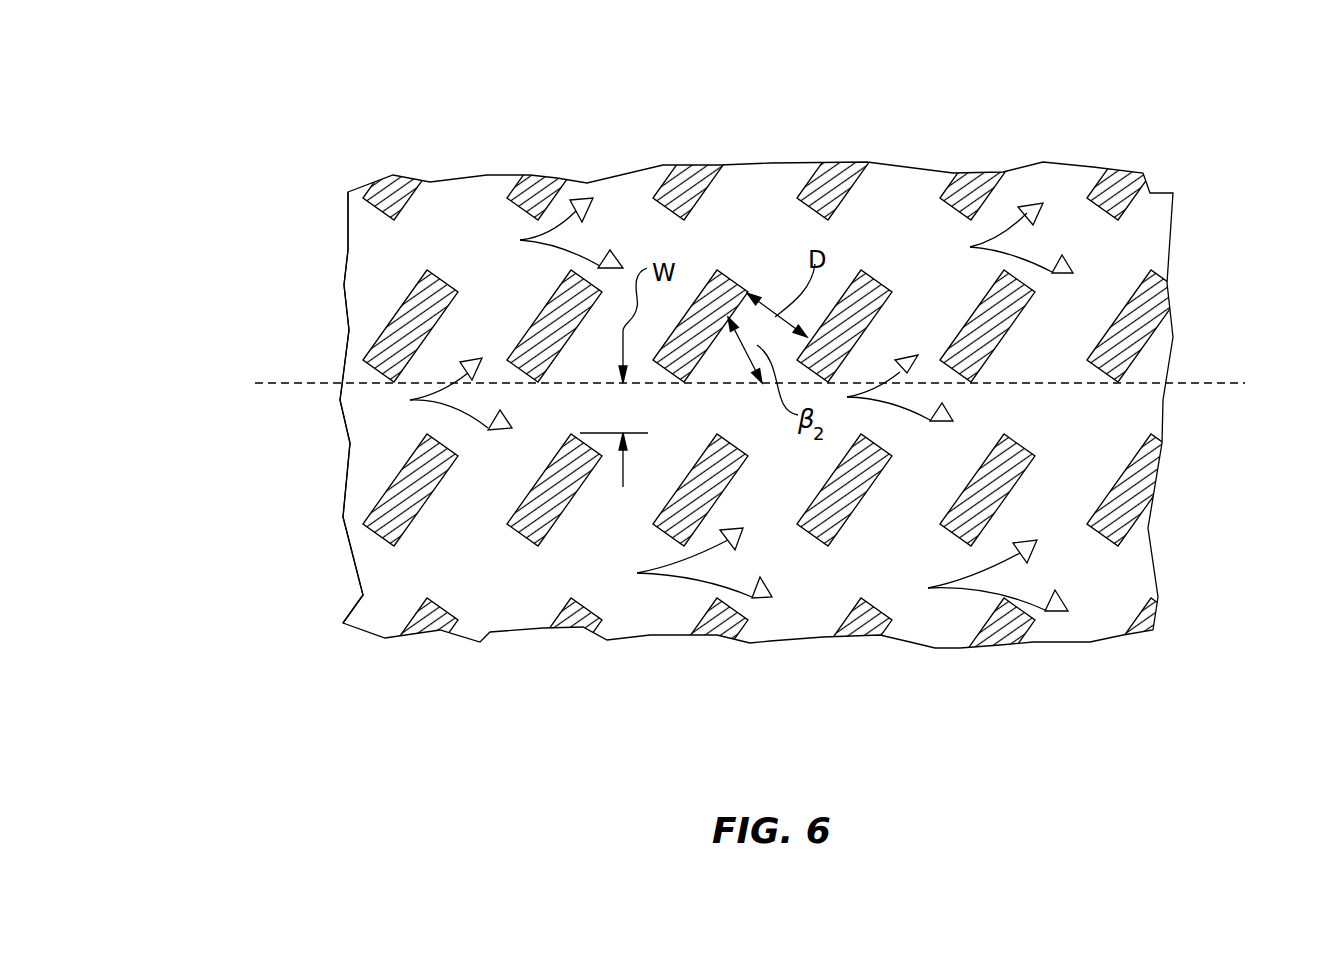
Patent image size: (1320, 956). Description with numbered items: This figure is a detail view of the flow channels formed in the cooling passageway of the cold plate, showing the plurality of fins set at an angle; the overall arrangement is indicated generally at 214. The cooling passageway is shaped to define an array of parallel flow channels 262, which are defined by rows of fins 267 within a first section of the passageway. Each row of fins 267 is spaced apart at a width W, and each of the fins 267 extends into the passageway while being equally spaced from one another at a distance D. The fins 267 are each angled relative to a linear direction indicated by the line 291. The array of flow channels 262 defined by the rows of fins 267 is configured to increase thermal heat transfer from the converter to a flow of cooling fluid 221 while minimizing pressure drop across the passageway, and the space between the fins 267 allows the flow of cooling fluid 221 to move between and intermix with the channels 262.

The absorbent article layer 214 is at (250, 95).
The flow of cooling fluid 221 is at (557, 220).
The flow channels 262 is at (296, 247).
The fins 267 is at (350, 317).
The line 291 is at (1200, 383).